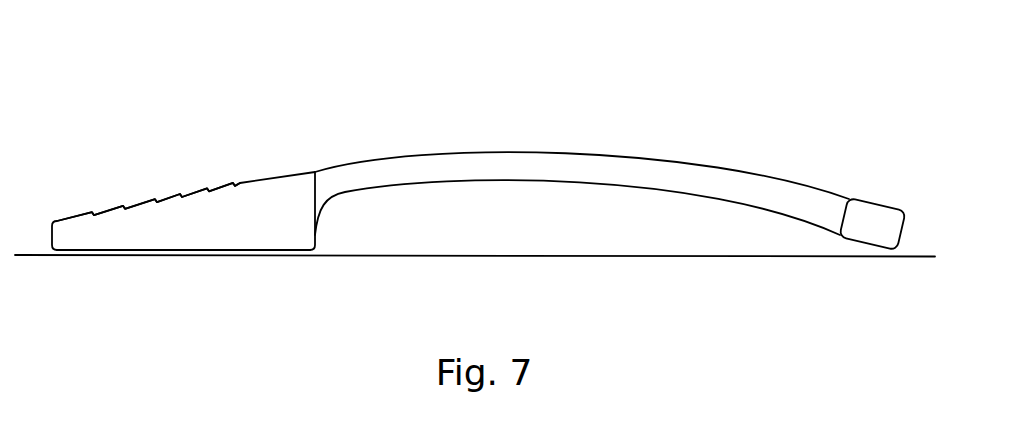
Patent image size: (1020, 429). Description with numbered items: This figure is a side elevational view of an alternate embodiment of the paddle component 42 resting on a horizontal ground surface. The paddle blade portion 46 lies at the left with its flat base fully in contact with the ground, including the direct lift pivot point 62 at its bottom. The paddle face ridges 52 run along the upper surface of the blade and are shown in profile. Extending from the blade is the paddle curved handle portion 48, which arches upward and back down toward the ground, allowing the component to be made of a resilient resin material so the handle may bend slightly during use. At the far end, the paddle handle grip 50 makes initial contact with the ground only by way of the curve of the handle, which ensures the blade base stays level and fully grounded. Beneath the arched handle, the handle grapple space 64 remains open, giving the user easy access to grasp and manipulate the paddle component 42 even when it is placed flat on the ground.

The paddle component 42 is at (479, 178).
The paddle blade portion 46 is at (247, 242).
The paddle curved handle portion 48 is at (582, 194).
The paddle handle grip 50 is at (878, 198).
The paddle face ridges 52 is at (77, 214).
The direct lift pivot point 62 is at (58, 259).
The handle grapple space 64 is at (520, 212).